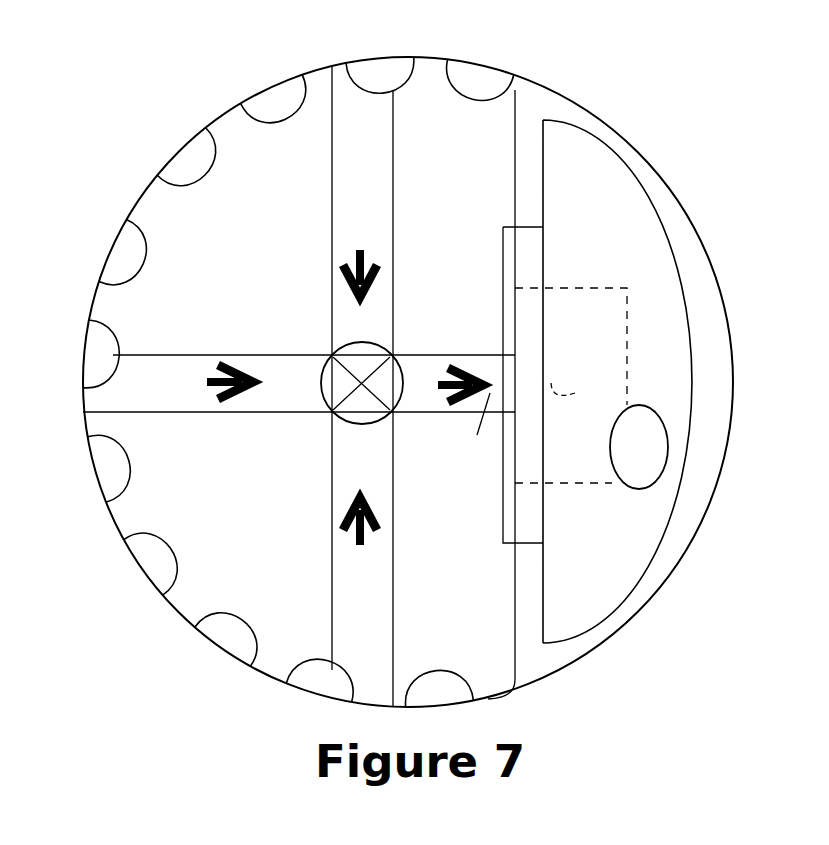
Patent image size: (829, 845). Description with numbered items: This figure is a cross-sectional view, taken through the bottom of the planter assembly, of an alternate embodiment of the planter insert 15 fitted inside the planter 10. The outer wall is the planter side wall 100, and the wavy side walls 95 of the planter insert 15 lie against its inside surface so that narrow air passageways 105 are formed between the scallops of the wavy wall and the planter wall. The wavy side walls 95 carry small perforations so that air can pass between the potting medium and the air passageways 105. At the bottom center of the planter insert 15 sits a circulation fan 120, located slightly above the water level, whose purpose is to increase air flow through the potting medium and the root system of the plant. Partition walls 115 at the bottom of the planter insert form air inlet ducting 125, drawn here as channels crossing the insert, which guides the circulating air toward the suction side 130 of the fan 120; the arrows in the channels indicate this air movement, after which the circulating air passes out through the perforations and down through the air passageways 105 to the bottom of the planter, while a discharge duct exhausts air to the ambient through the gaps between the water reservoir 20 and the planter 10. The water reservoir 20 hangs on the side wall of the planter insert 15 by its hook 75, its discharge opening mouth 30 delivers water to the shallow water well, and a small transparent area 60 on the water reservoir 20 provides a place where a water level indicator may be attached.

The planter 10 is at (512, 73).
The planter insert 15 is at (517, 117).
The water reservoir 20 is at (607, 145).
The discharge opening mouth 30 is at (568, 378).
The transparent area 60 is at (640, 489).
The hook 75 is at (502, 543).
The wavy side walls 95 is at (257, 117).
The planter side wall 100 is at (118, 233).
The air passageways 105 is at (188, 168).
The partition walls 115 is at (205, 328).
The circulation fan 120 is at (362, 383).
The air inlet ducting 125 is at (177, 388).
The suction side 130 is at (321, 398).